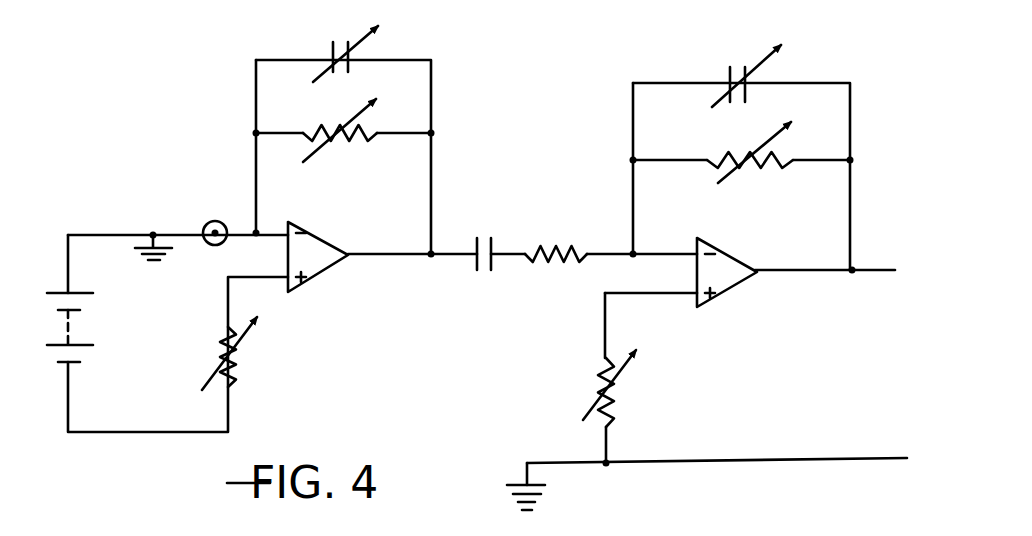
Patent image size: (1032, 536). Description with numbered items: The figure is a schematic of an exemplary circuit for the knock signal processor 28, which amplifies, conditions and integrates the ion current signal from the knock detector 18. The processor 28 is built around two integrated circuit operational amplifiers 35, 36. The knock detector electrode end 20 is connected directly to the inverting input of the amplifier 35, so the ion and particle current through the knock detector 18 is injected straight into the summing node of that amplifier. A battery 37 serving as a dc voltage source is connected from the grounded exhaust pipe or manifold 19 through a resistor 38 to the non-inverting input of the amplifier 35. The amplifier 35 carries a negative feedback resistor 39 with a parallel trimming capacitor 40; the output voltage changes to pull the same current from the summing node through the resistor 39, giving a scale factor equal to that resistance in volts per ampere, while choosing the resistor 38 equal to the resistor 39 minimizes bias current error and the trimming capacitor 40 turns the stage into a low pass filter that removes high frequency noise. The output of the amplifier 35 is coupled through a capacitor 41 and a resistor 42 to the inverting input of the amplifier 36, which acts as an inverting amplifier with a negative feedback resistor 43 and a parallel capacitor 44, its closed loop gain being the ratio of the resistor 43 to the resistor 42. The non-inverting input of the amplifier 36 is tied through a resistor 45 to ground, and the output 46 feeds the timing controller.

The knock detector 18 is at (203, 250).
The grounded exhaust pipe or manifold 19 is at (146, 248).
The knock detector electrode end 20 is at (215, 221).
The knock signal processor 28 is at (418, 372).
The operational amplifier 35 is at (321, 239).
The operational amplifier 36 is at (731, 253).
The battery 37 is at (88, 338).
The resistor 38 is at (236, 363).
The negative feedback resistor 39 is at (352, 136).
The trimming capacitor 40 is at (358, 50).
The capacitor 41 is at (477, 266).
The resistor 42 is at (545, 249).
The negative feedback resistor 43 is at (728, 153).
The capacitor 44 is at (728, 72).
The resistor 45 is at (598, 382).
The output 46 is at (873, 273).